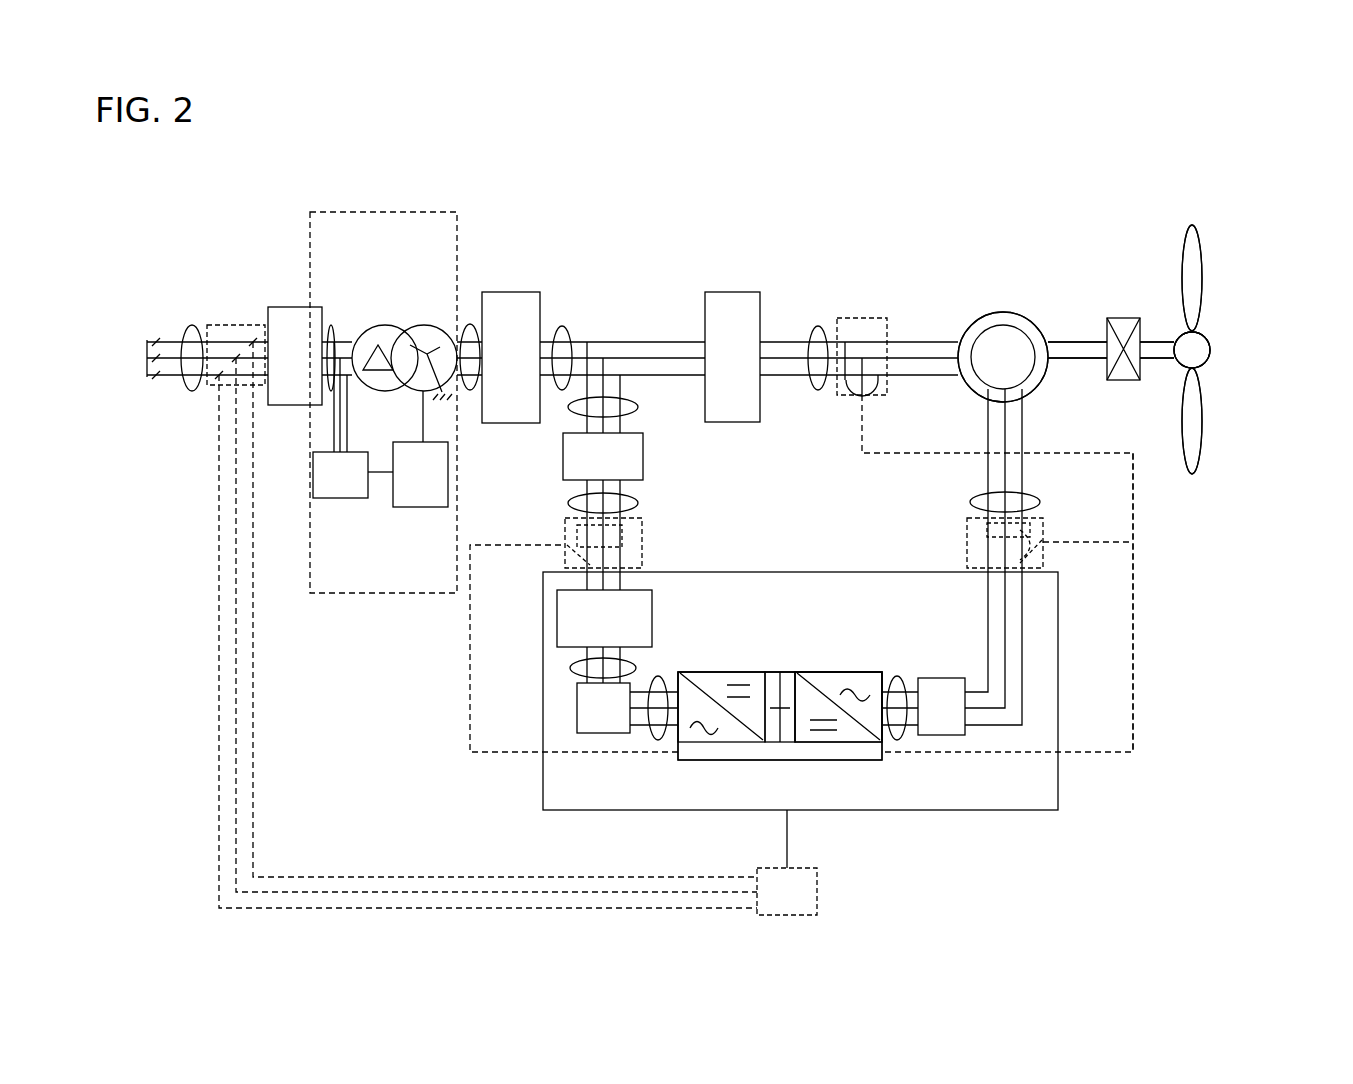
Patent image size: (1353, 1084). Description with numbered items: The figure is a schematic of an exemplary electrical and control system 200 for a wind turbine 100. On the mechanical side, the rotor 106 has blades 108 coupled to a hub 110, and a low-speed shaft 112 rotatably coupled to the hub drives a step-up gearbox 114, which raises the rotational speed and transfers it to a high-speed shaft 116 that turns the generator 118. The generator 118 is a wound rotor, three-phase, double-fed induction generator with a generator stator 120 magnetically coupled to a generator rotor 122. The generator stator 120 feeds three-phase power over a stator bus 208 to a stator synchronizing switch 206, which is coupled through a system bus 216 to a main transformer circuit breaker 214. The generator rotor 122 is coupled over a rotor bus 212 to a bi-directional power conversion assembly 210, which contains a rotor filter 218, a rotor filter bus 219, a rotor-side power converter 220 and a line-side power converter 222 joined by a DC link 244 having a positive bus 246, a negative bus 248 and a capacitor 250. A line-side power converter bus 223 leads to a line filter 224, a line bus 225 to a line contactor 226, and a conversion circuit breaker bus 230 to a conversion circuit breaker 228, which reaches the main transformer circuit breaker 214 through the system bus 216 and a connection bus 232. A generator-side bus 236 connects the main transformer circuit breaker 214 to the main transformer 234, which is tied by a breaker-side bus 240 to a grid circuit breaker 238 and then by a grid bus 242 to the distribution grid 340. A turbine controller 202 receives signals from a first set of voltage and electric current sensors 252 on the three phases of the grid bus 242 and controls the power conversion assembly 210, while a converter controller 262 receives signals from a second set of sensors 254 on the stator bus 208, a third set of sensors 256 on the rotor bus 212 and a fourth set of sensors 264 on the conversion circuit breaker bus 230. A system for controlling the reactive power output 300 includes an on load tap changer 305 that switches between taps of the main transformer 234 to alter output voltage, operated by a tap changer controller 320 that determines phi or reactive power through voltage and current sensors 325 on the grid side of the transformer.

The wind turbine 100 is at (1184, 198).
The rotor 106 is at (1219, 315).
The blades 108 is at (1202, 283).
The hub 110 is at (1211, 350).
The low-speed shaft 112 is at (1150, 342).
The step-up gearbox 114 is at (1118, 318).
The high-speed shaft 116 is at (1077, 337).
The generator 118 is at (1007, 277).
The generator stator 120 is at (1005, 312).
The generator rotor 122 is at (997, 333).
The electrical and control system 200 is at (240, 192).
The turbine controller 202 is at (787, 891).
The stator synchronizing switch 206 is at (733, 292).
The stator bus 208 is at (818, 326).
The power conversion assembly 210 is at (1062, 685).
The rotor bus 212 is at (1042, 503).
The main transformer circuit breaker 214 is at (510, 292).
The system bus 216 is at (562, 326).
The rotor filter 218 is at (940, 687).
The rotor filter bus 219 is at (897, 677).
The rotor-side power converter 220 is at (882, 742).
The line-side power converter 222 is at (672, 748).
The line-side power converter bus 223 is at (660, 678).
The line filter 224 is at (577, 708).
The line bus 225 is at (572, 668).
The line contactor 226 is at (557, 620).
The conversion circuit breaker 228 is at (647, 455).
The conversion circuit breaker bus 230 is at (637, 503).
The connection bus 232 is at (638, 404).
The main transformer 234 is at (423, 325).
The generator-side bus 236 is at (468, 325).
The grid circuit breaker 238 is at (287, 307).
The breaker-side bus 240 is at (337, 335).
The grid bus 242 is at (193, 325).
The DC link 244 is at (762, 640).
The positive bus 246 is at (795, 675).
The negative bus 248 is at (792, 748).
The capacitor 250 is at (767, 685).
The first set of voltage and electric current sensors 252 is at (207, 400).
The second set of voltage and electric current sensors 254 is at (877, 318).
The third set of voltage and electric current sensors 256 is at (967, 540).
The converter controller 262 is at (838, 748).
The fourth set of voltage and electric current sensors 264 is at (650, 545).
The system for controlling the reactive power output 300 is at (387, 212).
The on load tap changer 305 is at (405, 508).
The tap changer controller 320 is at (333, 500).
The voltage and current sensors 325 is at (367, 297).
The distribution grid 340 is at (150, 340).